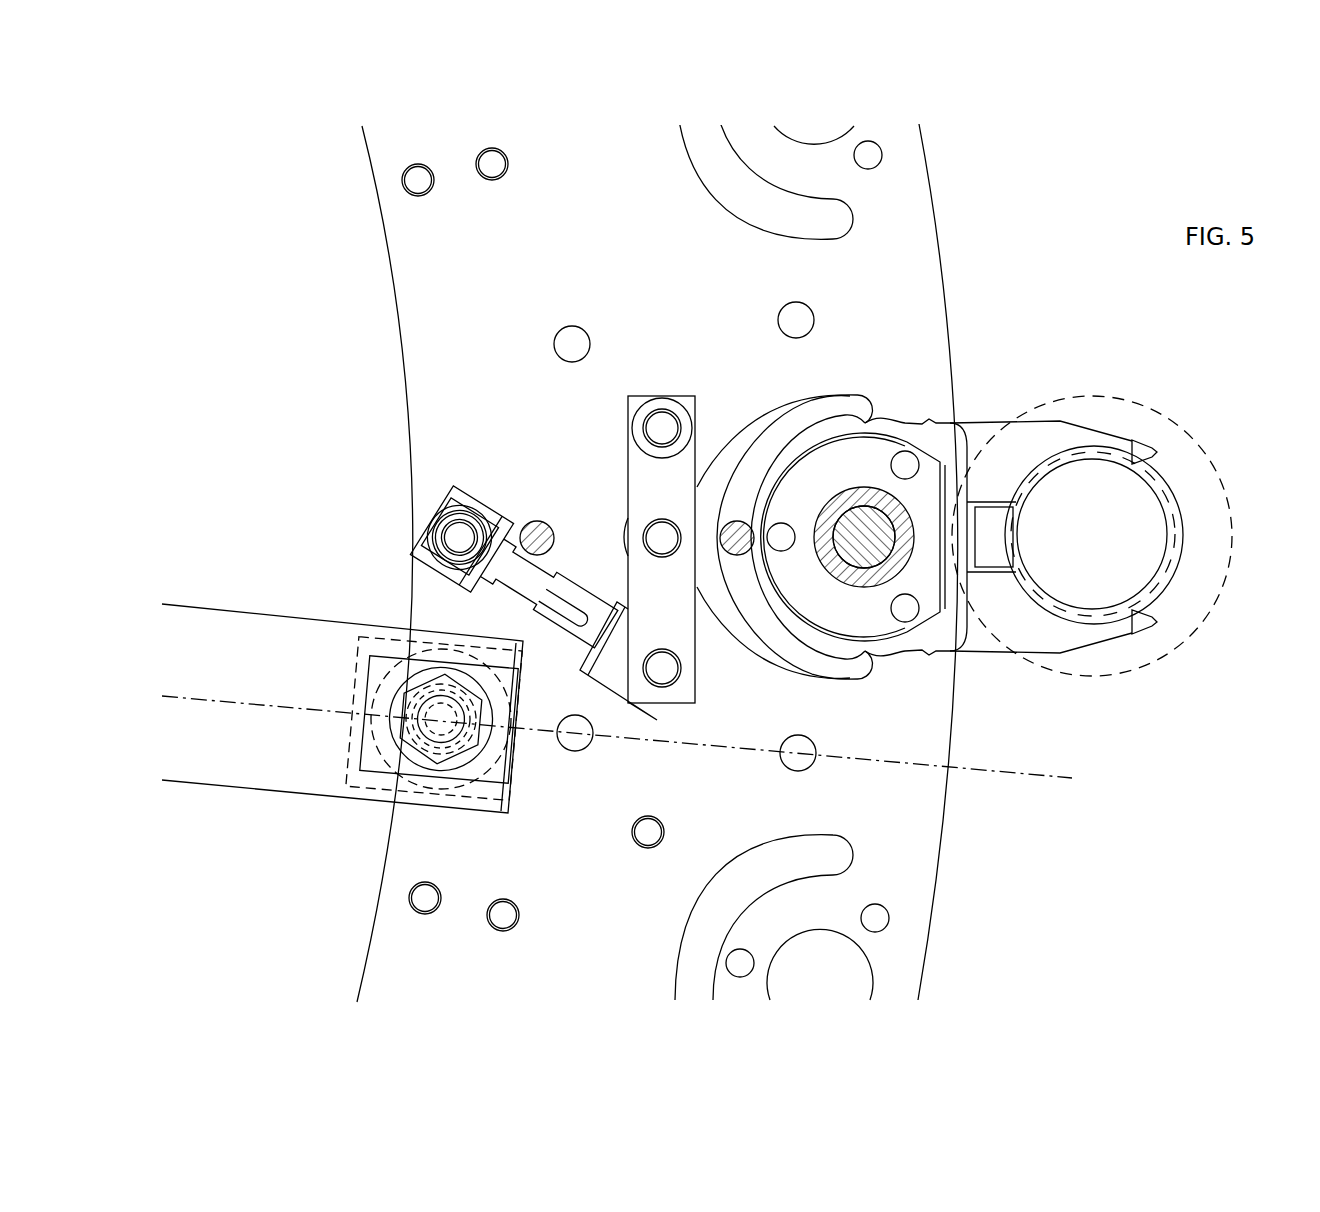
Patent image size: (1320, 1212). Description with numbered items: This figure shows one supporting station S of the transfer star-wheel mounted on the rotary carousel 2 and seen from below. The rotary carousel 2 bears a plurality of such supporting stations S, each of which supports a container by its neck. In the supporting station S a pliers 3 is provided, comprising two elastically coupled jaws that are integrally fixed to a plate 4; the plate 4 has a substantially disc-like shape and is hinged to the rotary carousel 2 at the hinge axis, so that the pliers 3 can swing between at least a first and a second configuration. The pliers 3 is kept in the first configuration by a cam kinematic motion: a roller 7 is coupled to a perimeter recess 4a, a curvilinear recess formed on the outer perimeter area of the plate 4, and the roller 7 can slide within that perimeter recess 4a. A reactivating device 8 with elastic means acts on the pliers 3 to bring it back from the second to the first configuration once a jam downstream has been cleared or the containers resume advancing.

The rotary carousel 2 is at (933, 733).
The pliers 3 is at (1004, 420).
The plate 4 is at (739, 664).
The perimeter recess 4a is at (707, 490).
The roller 7 is at (618, 524).
The reactivating device 8 is at (403, 513).
The supporting station S is at (1188, 383).